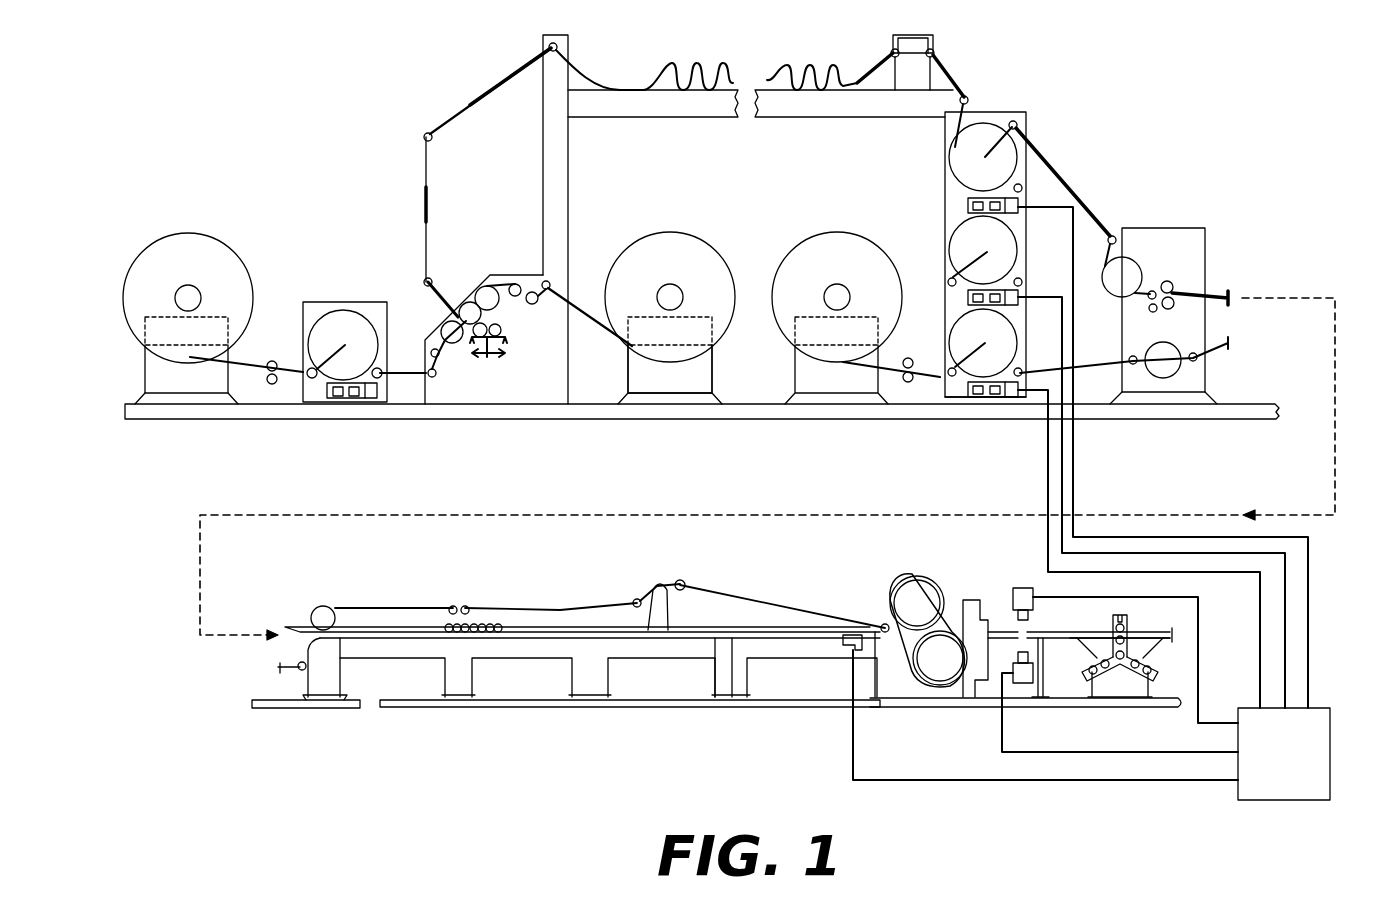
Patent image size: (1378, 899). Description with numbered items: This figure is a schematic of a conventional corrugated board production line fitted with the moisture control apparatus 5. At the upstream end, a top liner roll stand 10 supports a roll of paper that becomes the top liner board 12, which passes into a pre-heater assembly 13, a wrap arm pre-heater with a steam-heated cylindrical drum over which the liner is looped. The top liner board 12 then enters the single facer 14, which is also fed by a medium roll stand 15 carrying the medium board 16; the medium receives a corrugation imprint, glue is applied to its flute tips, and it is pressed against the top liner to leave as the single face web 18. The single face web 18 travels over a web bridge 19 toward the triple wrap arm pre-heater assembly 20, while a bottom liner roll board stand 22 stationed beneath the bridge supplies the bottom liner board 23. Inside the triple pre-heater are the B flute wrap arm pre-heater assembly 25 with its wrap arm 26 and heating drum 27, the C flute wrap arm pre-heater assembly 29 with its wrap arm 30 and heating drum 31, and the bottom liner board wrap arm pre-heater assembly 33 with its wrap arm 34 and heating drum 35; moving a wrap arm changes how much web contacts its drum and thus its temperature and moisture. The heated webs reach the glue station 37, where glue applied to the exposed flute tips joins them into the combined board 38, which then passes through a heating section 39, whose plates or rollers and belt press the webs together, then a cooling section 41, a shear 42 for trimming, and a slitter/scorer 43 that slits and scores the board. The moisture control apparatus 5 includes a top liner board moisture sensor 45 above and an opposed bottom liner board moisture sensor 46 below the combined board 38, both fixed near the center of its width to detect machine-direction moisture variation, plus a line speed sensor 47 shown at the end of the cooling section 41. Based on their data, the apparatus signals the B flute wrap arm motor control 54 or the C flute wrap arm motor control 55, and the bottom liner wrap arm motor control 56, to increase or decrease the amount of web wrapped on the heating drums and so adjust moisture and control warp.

The moisture control apparatus 5 is at (1297, 769).
The top liner roll stand 10 is at (160, 375).
The top liner board 12 is at (293, 382).
The pre-heater assembly 13 is at (362, 284).
The single facer 14 is at (493, 394).
The medium roll stand 15 is at (645, 383).
The medium board 16 is at (597, 322).
The single face web 18 is at (425, 207).
The web bridge 19 is at (777, 102).
The triple wrap arm pre-heater assembly 20 is at (1106, 410).
The bottom liner roll board stand 22 is at (837, 380).
The bottom liner board 23 is at (892, 372).
The "B" flute wrap arm pre-heater assembly 25 is at (987, 191).
The wrap arm 26 is at (1000, 185).
The heating drum 27 is at (978, 168).
The "C" flute wrap arm pre-heater assembly 29 is at (986, 279).
The wrap arm 30 is at (968, 262).
The heating drum 31 is at (1010, 272).
The bottom liner board wrap arm pre-heater assembly 33 is at (979, 401).
The wrap arm 34 is at (968, 352).
The heating drum 35 is at (990, 405).
The glue station 37 is at (1142, 398).
The combined board 38 is at (722, 630).
The heating section 39 is at (457, 683).
The cooling section 41 is at (740, 700).
The shear 42 is at (902, 697).
The slitter/scorer 43 is at (1120, 688).
The top liner board moisture sensor 45 is at (1023, 590).
The bottom liner board moisture sensor 46 is at (1022, 676).
The line speed sensor 47 is at (843, 642).
The "B" flute pre-heater assembly wrap arm motor control 54 is at (1012, 215).
The "C" flute pre-heater assembly wrap arm motor control 55 is at (1012, 303).
The bottom liner board pre-heater assembly wrap arm motor control 56 is at (1007, 398).